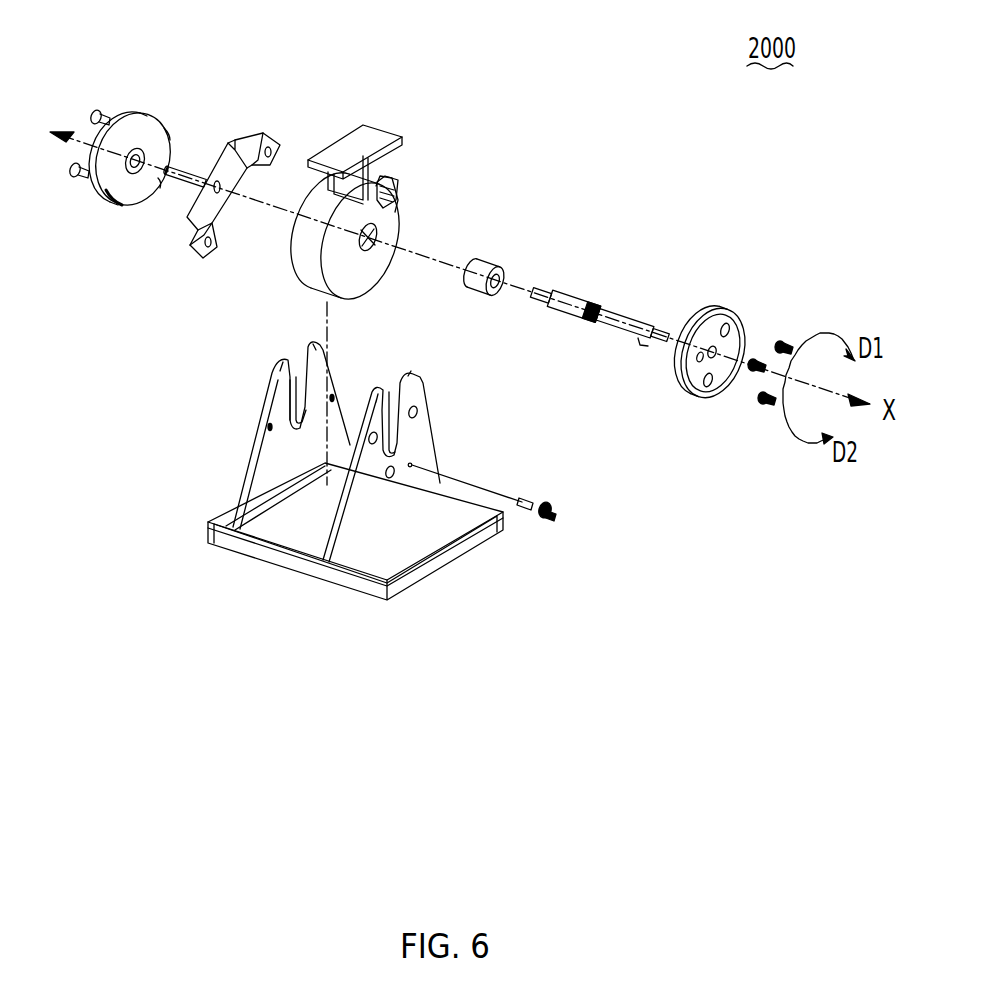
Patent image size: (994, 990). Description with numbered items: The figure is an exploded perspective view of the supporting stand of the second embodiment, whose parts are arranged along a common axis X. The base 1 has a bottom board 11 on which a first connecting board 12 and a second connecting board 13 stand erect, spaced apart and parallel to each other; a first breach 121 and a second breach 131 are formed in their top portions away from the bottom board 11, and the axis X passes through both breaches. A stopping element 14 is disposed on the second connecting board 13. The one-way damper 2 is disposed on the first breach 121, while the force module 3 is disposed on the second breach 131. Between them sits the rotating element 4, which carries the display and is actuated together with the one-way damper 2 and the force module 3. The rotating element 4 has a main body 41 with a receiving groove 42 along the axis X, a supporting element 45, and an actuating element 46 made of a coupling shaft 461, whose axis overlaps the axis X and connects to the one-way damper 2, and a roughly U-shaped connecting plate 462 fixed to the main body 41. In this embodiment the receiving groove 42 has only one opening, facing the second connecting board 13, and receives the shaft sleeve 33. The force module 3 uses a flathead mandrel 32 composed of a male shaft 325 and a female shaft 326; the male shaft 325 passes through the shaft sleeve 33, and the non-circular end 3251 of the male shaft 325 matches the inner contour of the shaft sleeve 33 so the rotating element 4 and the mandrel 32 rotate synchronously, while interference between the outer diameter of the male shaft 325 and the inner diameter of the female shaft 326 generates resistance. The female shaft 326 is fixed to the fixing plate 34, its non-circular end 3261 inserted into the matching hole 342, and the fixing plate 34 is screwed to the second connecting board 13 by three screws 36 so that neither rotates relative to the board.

The base 1 is at (432, 542).
The bottom board 11 is at (290, 532).
The first connecting board 12 is at (266, 462).
The first breach 121 is at (288, 406).
The second connecting board 13 is at (424, 444).
The second breach 131 is at (412, 422).
The stopping element 14 is at (538, 498).
The one-way damper 2 is at (135, 112).
The force module 3 is at (746, 251).
The mandrel 32 is at (576, 318).
The male shaft 325 is at (577, 294).
The end of the male shaft 3251 is at (541, 288).
The female shaft 326 is at (628, 312).
The end of the female shaft 3261 is at (666, 330).
The shaft sleeve 33 is at (490, 257).
The fixing plate 34 is at (700, 396).
The hole 342 is at (718, 350).
The screws 36 is at (764, 404).
The rotating element 4 is at (403, 81).
The main body 41 is at (296, 268).
The receiving groove 42 is at (378, 236).
The supporting element 45 is at (358, 132).
The actuating element 46 is at (280, 94).
The coupling shaft 461 is at (185, 166).
The connecting plate 462 is at (236, 135).